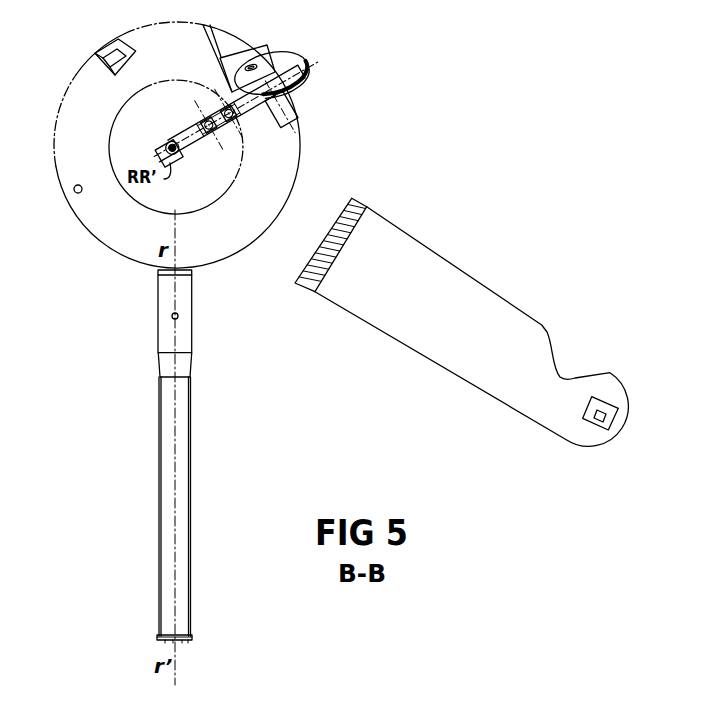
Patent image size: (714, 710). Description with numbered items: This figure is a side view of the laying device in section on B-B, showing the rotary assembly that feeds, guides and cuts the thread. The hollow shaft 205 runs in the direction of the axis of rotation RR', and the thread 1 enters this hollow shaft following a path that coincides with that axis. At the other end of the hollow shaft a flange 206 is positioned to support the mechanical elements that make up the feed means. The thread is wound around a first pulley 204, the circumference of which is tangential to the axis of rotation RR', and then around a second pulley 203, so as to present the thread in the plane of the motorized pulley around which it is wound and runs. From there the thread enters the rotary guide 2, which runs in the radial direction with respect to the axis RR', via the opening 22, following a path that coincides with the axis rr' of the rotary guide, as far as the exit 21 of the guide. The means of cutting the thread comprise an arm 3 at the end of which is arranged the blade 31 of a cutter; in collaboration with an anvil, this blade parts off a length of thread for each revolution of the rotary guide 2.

The thread 1 is at (303, 80).
The rotary guide 2 is at (158, 440).
The arm 3 is at (478, 302).
The exit of the rotary guide 21 is at (172, 643).
The opening of the rotary guide 22 is at (180, 272).
The blade 31 is at (600, 417).
The second pulley 203 is at (296, 56).
The first pulley 204 is at (197, 143).
The hollow shaft 205 is at (109, 142).
The flange 206 is at (97, 240).